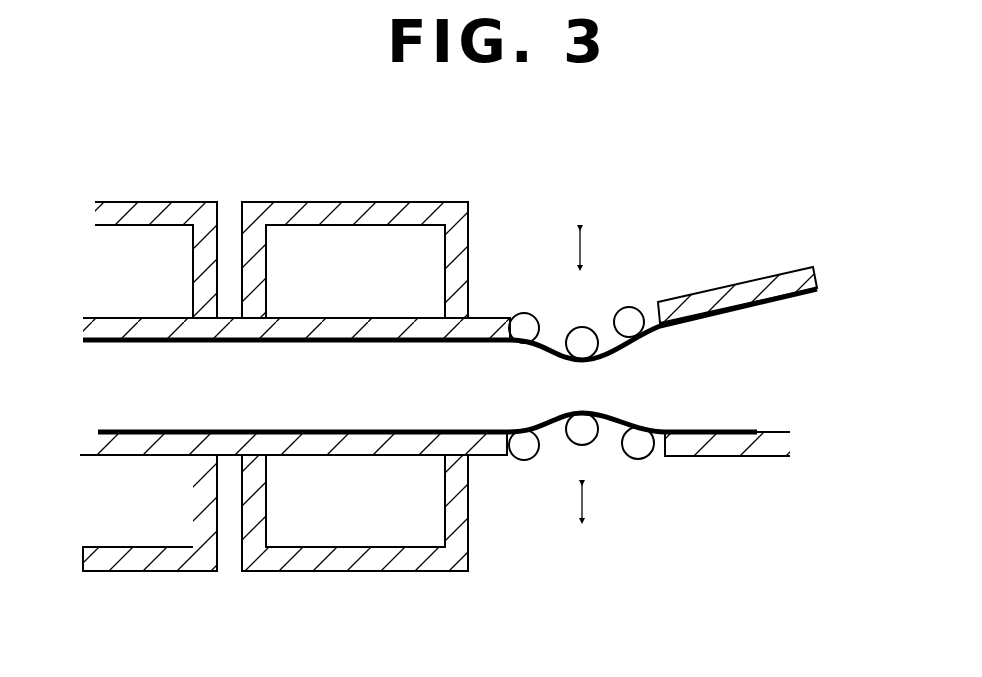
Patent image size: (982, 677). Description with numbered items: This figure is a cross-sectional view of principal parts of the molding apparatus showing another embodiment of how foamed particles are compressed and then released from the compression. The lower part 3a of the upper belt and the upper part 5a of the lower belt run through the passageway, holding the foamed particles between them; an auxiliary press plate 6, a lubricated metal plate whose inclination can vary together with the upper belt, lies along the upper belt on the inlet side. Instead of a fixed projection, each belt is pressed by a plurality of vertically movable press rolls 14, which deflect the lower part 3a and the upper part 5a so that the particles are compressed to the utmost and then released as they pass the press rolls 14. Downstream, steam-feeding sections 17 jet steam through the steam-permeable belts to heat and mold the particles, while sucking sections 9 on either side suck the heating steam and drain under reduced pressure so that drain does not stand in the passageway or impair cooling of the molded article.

The steam-feeding section 17 is at (192, 208).
The sucking section 9 is at (345, 207).
The press roll 14 is at (523, 318).
The auxiliary press plate 6 is at (733, 292).
The lower part of the upper belt 3a is at (628, 352).
The upper part of the lower belt 5a is at (618, 412).